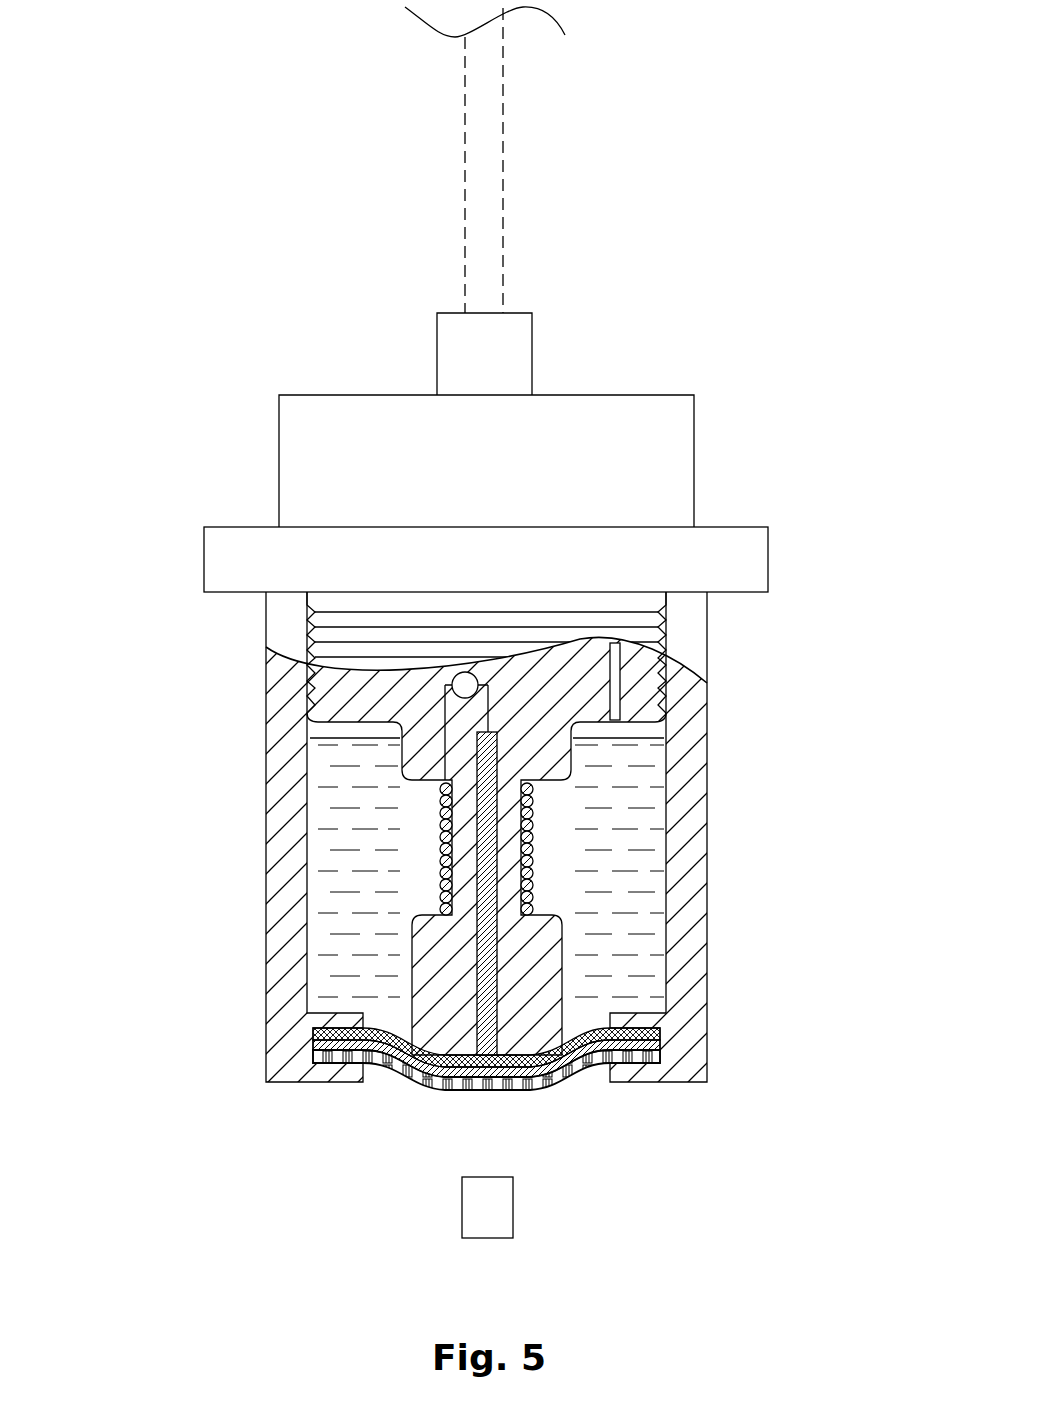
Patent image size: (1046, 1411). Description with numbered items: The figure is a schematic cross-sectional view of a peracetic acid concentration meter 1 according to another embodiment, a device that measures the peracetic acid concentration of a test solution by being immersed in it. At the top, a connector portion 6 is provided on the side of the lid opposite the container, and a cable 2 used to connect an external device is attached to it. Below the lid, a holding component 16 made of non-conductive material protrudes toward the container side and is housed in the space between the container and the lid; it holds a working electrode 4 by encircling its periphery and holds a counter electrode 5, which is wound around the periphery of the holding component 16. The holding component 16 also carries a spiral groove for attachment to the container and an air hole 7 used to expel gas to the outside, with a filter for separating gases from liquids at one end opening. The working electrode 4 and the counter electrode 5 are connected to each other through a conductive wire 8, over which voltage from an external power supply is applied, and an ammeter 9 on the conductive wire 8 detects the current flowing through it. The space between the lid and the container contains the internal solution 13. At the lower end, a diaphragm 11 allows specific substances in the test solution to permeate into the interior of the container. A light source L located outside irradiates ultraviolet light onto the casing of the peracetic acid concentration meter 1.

The peracetic acid concentration meter 1 is at (723, 163).
The cable 2 is at (465, 200).
The working electrode 4 is at (475, 985).
The counter electrode 5 is at (533, 848).
The connector portion 6 is at (532, 355).
The air hole 7 is at (620, 690).
The conductive wire 8 is at (490, 732).
The ammeter 9 is at (458, 672).
The diaphragm 11 is at (510, 1090).
The internal solution 13 is at (613, 907).
The holding component 16 is at (332, 723).
The light source L is at (513, 1208).